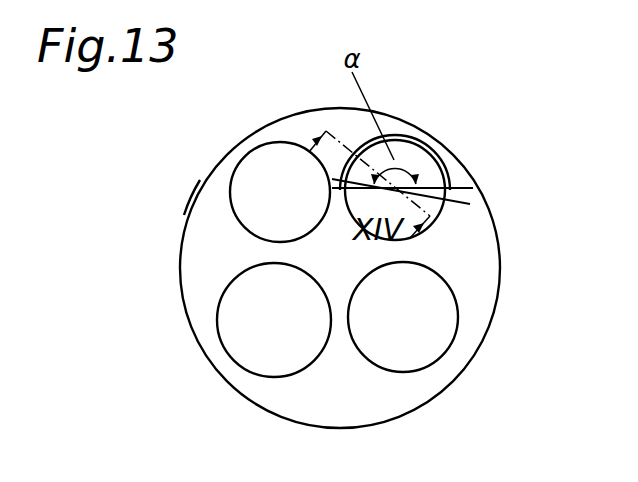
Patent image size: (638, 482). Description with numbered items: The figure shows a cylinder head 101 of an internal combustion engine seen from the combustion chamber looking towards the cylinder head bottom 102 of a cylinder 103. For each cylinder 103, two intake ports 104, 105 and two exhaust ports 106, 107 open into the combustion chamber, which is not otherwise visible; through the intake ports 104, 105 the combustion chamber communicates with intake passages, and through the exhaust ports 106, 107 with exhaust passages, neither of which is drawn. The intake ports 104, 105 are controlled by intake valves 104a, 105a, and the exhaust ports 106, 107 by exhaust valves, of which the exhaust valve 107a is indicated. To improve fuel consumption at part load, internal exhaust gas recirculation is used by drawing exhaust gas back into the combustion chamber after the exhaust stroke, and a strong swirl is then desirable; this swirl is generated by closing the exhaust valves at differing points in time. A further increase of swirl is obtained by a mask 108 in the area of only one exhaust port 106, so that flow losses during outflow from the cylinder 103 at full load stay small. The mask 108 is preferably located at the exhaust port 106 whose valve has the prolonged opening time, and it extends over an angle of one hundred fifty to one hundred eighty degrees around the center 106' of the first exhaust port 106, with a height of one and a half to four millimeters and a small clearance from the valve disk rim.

The cylinder head 101 is at (494, 250).
The cylinder head bottom 102 is at (472, 200).
The cylinder 103 is at (184, 215).
The intake port 104 is at (410, 375).
The intake valve 104a is at (430, 347).
The intake port 105 is at (270, 375).
The intake valve 105a is at (245, 343).
The exhaust port 106 is at (465, 190).
The center of the first exhaust port 106' is at (461, 203).
The exhaust port 107 is at (238, 168).
The exhaust valve 107a is at (275, 158).
The mask 108 is at (441, 153).